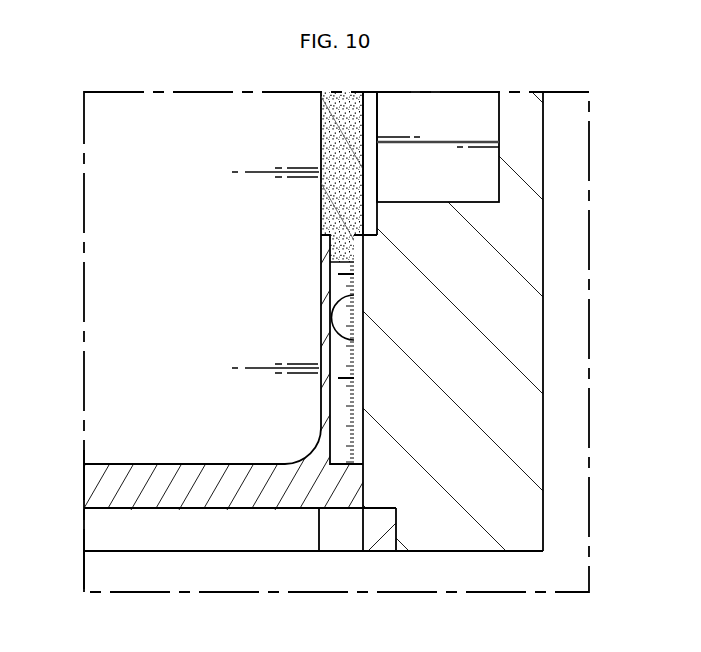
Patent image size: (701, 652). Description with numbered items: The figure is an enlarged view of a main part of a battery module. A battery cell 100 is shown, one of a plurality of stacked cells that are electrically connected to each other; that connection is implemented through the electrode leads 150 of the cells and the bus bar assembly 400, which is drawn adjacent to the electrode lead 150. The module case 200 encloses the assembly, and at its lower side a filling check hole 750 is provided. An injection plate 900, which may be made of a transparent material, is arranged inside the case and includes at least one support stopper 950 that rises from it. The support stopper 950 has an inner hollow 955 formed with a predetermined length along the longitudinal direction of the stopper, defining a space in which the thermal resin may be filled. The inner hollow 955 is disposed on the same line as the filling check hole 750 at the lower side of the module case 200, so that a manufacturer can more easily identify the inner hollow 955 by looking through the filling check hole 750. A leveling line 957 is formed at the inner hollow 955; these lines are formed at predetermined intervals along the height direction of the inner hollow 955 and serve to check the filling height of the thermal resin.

The battery cell 100 is at (112, 260).
The electrode lead 150 is at (470, 117).
The module case 200 is at (112, 533).
The bus bar assembly 400 is at (546, 147).
The filling check hole 750 is at (320, 526).
The injection plate 900 is at (112, 489).
The support stopper 950 is at (357, 267).
The inner hollow 955 is at (354, 340).
The leveling line 957 is at (340, 381).